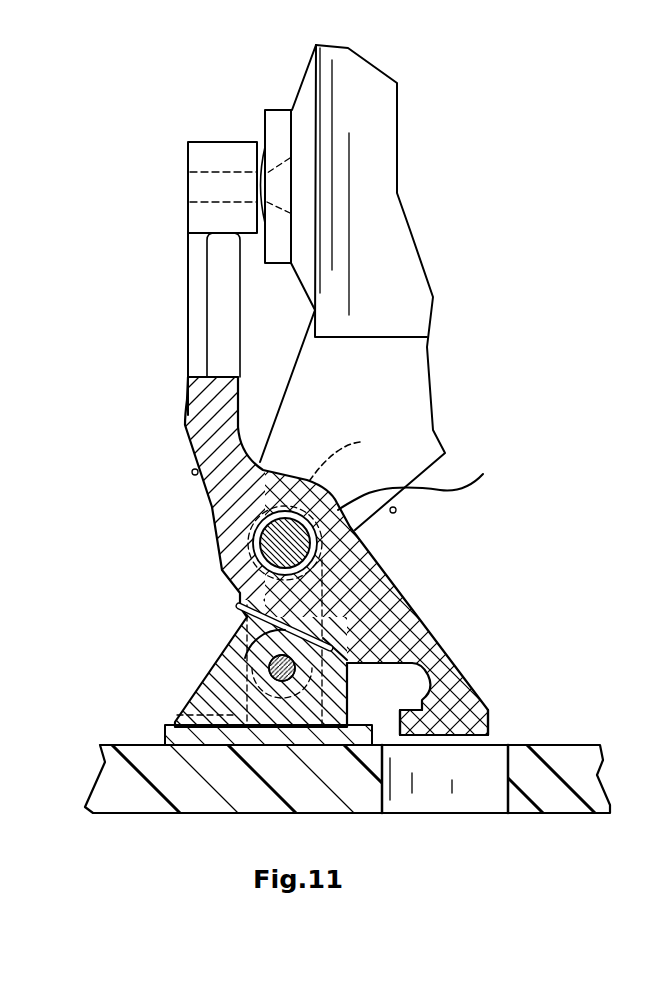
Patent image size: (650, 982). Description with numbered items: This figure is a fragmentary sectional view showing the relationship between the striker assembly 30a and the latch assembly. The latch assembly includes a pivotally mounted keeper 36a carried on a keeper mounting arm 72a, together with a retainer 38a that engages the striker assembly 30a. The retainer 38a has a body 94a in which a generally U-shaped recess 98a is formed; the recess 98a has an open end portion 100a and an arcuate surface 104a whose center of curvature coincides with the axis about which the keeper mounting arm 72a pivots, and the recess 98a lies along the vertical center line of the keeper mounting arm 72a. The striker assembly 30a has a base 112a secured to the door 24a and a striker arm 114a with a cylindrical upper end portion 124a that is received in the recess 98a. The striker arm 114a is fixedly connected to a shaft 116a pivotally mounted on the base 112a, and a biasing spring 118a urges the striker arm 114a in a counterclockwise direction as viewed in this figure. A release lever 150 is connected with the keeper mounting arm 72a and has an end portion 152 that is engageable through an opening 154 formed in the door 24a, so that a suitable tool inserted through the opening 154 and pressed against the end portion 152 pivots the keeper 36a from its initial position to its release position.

The keeper 36a is at (272, 133).
The keeper mounting arm 72a is at (198, 342).
The retainer 38a is at (391, 287).
The arcuate surface 104a is at (363, 452).
The open end portion 100a is at (265, 513).
The body 94a is at (232, 527).
The cylindrical upper end portion 124a is at (250, 548).
The recess 98a is at (330, 557).
The striker assembly 30a is at (215, 588).
The biasing spring 118a is at (238, 607).
The striker arm 114a is at (243, 630).
The shaft 116a is at (268, 665).
The base 112a is at (175, 727).
The release lever 150 is at (423, 642).
The end portion 152 is at (470, 727).
The door 24a is at (148, 798).
The opening 154 is at (475, 790).